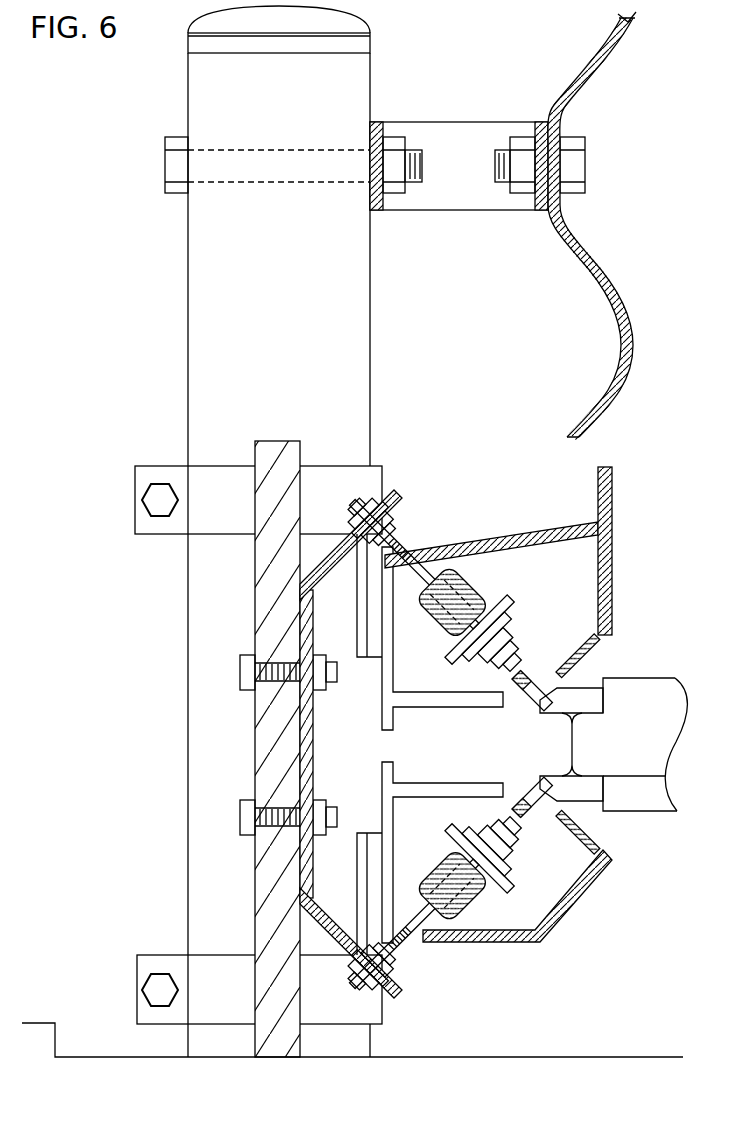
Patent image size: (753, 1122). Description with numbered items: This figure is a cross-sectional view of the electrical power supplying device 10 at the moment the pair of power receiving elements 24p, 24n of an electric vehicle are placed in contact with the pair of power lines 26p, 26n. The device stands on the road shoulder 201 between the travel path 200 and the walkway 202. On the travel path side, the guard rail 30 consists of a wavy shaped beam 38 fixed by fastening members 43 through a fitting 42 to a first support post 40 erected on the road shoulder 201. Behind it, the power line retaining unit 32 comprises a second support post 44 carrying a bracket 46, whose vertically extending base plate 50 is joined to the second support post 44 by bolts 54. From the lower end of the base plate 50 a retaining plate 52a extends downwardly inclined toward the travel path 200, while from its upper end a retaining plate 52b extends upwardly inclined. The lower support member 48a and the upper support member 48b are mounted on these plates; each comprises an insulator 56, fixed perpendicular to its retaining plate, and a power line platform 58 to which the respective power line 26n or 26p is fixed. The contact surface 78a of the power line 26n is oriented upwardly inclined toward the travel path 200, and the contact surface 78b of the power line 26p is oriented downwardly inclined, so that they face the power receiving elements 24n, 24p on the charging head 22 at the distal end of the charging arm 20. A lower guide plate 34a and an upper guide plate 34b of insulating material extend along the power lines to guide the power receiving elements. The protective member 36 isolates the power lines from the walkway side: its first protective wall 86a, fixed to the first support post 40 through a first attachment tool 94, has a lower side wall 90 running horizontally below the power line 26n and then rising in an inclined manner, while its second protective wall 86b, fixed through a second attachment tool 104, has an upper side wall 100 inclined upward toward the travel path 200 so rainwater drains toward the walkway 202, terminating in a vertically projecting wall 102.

The electrical power supplying device 10 is at (162, 62).
The first support post 40 is at (357, 12).
The fitting 42 is at (455, 125).
The fastening member 43 is at (495, 157).
The beam 38 is at (640, 350).
The guard rail 30 is at (634, 46).
The second attachment tool 104 is at (137, 483).
The first attachment tool 94 is at (137, 972).
The second support post 44 is at (260, 890).
The bolt 54 is at (240, 816).
The base plate 50 is at (312, 727).
The power line retaining unit 32 is at (402, 496).
The bracket 46 is at (401, 994).
The protective member 36 is at (442, 745).
The second protective wall 86b is at (393, 727).
The first protective wall 86a is at (393, 762).
The upper side wall 100 is at (520, 540).
The projecting wall 102 is at (612, 492).
The lower side wall 90 is at (510, 944).
The retaining plate 52b is at (394, 510).
The retaining plate 52a is at (398, 972).
The insulator 56 is at (428, 612).
The support member 48b is at (452, 663).
The support member 48a is at (452, 830).
The power line platform 58 is at (512, 637).
The power line 26p is at (531, 700).
The power line 26n is at (531, 793).
The guide plate 34b is at (588, 657).
The guide plate 34a is at (588, 836).
The charging arm 20 is at (614, 736).
The charging head 22 is at (657, 813).
The power receiving element 24p is at (605, 708).
The power receiving element 24n is at (605, 786).
The contact surface 78b is at (575, 716).
The contact surface 78a is at (575, 778).
The walkway 202 is at (55, 1064).
The road shoulder 201 is at (690, 1064).
The travel path 200 is at (689, 1064).